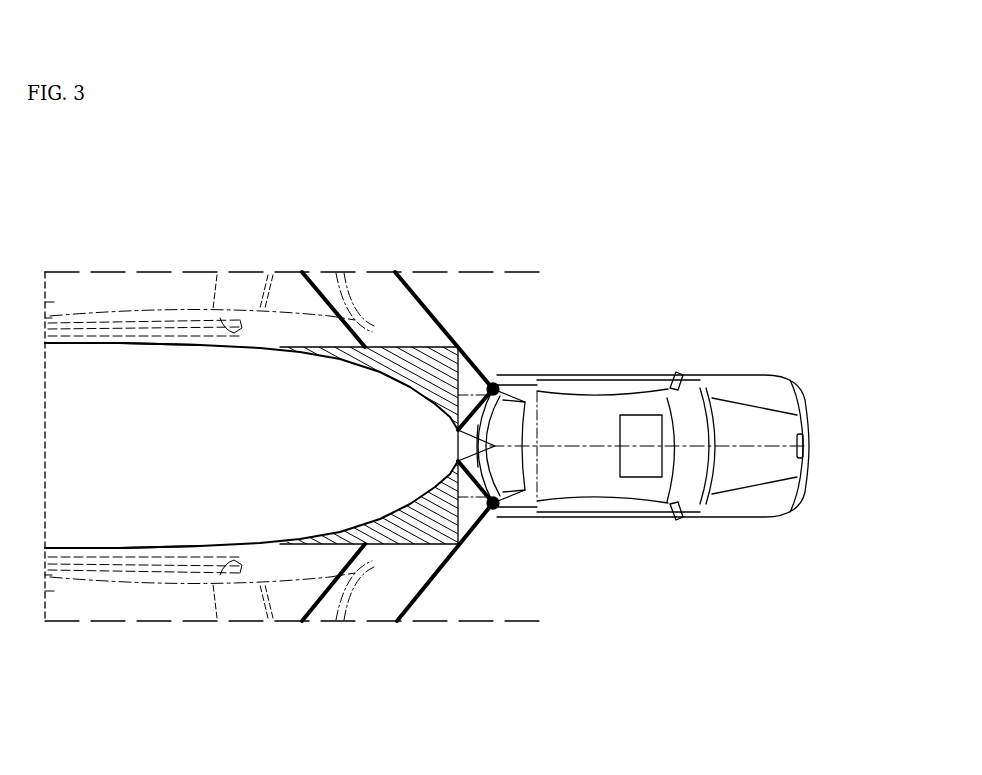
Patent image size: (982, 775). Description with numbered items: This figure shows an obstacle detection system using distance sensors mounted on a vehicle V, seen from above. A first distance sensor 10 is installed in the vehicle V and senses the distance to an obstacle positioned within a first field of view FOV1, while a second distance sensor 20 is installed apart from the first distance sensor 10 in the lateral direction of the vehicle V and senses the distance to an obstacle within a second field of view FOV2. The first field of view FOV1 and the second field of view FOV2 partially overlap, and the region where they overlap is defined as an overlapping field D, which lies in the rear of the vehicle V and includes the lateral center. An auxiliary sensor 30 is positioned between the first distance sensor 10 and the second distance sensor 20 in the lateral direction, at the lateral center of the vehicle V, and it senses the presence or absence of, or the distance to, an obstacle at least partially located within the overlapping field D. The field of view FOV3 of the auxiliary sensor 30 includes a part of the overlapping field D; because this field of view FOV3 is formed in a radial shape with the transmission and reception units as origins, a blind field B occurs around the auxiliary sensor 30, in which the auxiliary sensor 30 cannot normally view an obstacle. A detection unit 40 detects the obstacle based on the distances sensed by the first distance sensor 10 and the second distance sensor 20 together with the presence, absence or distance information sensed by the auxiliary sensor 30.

The first distance sensor 10 is at (494, 384).
The second distance sensor 20 is at (495, 509).
The auxiliary sensor 30 is at (478, 433).
The detection unit 40 is at (647, 448).
The vehicle V is at (801, 411).
The overlapping field D is at (366, 297).
The blind field B is at (417, 372).
The first field of view FOV1 is at (416, 296).
The second field of view FOV2 is at (419, 596).
The field of view of the auxiliary sensor FOV3 is at (141, 546).